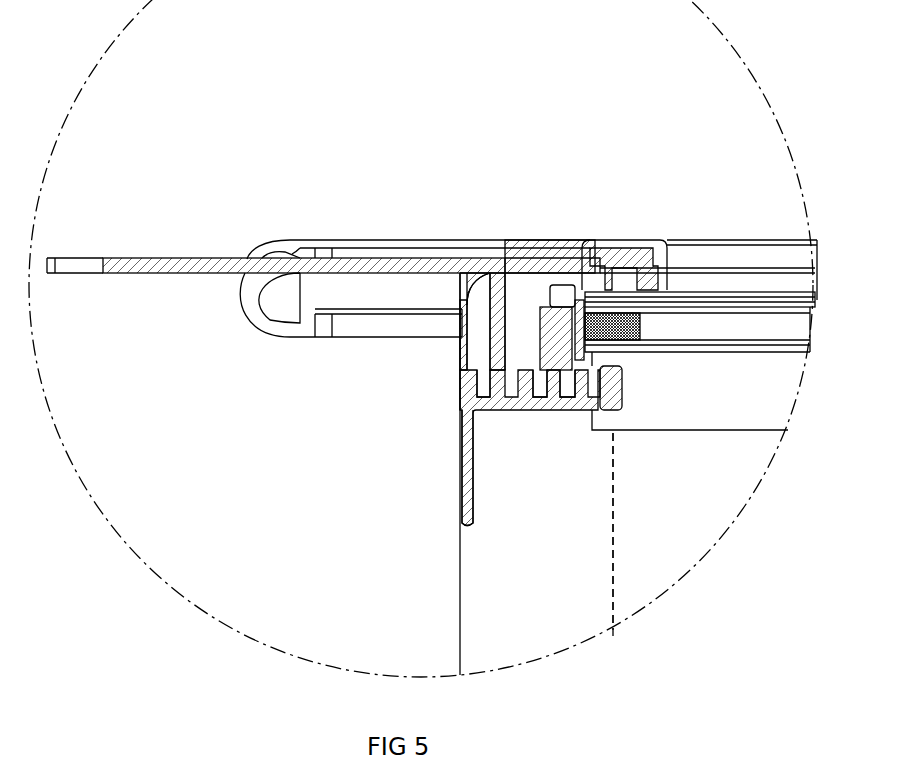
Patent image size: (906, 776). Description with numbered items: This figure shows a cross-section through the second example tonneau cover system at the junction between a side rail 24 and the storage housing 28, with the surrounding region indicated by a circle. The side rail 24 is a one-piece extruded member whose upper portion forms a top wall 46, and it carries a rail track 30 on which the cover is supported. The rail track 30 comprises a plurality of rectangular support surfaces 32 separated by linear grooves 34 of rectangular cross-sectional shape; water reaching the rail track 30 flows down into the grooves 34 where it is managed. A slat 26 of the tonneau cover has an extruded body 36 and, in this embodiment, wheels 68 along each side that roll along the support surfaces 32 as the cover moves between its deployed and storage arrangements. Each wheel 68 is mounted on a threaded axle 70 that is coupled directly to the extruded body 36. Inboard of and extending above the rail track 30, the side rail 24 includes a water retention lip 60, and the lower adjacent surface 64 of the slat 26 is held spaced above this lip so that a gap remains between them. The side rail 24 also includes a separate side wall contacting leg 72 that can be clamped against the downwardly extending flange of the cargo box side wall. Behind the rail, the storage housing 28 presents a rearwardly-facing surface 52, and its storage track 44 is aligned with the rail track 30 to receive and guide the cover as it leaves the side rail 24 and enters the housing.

The side rail 24 is at (446, 352).
The slat 26 is at (794, 292).
The storage housing 28 is at (688, 508).
The rail track 30 is at (519, 365).
The support surface 32 is at (540, 395).
The groove 34 is at (595, 405).
The extruded body 36 is at (686, 307).
The storage track 44 is at (612, 540).
The top wall 46 is at (517, 345).
The rearwardly-facing surface 52 is at (692, 482).
The water retention lip 60 is at (622, 368).
The lower adjacent surface 64 is at (797, 373).
The wheel 68 is at (564, 285).
The threaded axle 70 is at (640, 328).
The side wall contacting leg 72 is at (462, 494).